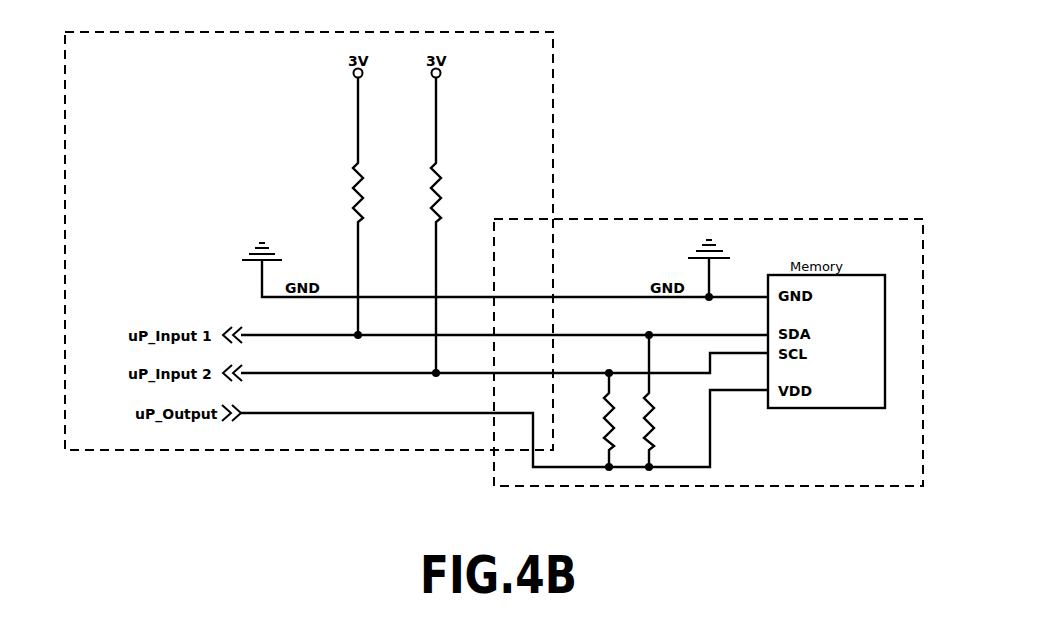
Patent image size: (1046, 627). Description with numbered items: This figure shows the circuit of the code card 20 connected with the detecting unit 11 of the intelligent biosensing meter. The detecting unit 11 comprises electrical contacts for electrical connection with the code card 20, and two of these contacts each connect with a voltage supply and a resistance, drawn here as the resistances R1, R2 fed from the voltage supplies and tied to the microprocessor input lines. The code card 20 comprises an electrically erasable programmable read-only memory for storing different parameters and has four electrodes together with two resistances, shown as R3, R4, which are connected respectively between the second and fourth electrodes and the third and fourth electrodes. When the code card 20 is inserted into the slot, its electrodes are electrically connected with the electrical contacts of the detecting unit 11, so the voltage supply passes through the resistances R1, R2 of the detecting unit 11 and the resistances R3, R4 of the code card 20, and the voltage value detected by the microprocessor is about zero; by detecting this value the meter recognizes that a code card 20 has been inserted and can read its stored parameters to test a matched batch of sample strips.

The detecting unit 11 is at (553, 72).
The code card 20 is at (677, 219).
The pull-up resistor 500K R1 is at (332, 202).
The pull-up resistor 500K R2 is at (463, 221).
The resistor 10K R3 is at (593, 420).
The resistor 10K R4 is at (672, 401).